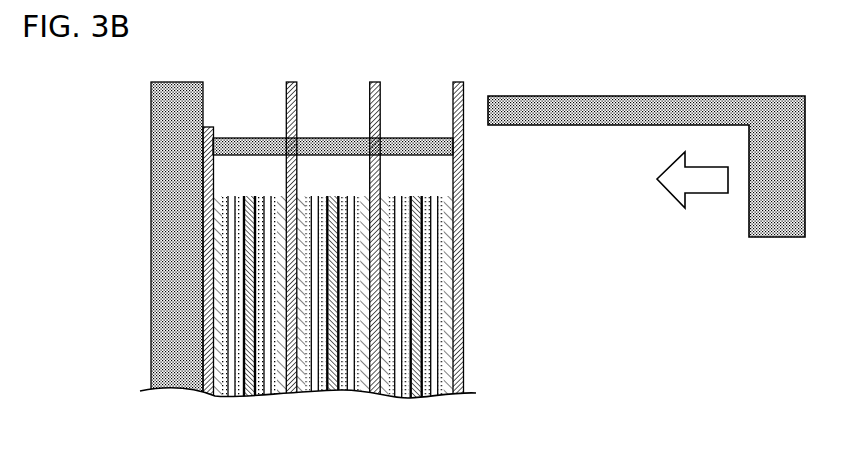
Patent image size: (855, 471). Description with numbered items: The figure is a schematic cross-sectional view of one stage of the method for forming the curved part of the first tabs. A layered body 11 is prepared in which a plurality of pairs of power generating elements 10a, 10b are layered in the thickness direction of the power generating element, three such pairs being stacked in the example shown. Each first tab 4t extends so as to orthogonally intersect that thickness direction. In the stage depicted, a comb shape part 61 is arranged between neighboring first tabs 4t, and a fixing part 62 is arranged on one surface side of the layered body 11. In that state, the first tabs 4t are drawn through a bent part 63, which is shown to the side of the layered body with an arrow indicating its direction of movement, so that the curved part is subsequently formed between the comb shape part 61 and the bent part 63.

The layered body 11 is at (431, 69).
The fixing part 62 is at (179, 93).
The comb shape part 61 is at (248, 144).
The first tab 4t is at (214, 178).
The power generating element 10a is at (252, 403).
The power generating element 10b is at (295, 403).
The bent part 63 is at (629, 107).